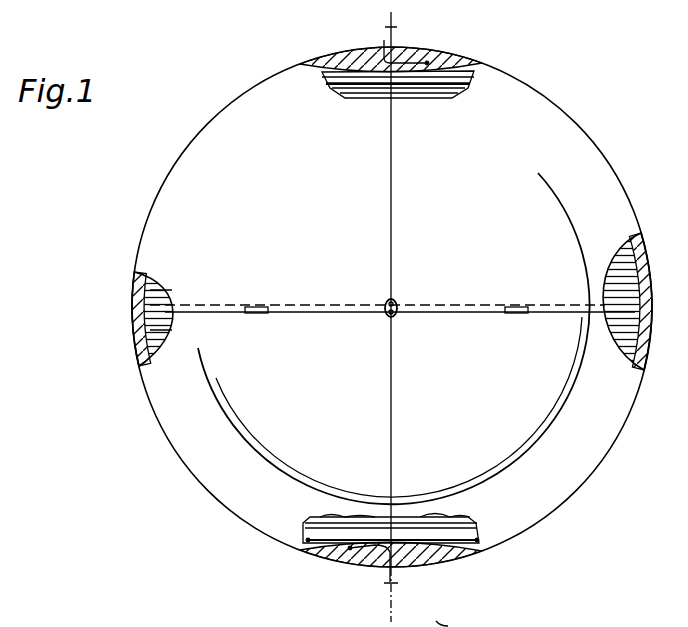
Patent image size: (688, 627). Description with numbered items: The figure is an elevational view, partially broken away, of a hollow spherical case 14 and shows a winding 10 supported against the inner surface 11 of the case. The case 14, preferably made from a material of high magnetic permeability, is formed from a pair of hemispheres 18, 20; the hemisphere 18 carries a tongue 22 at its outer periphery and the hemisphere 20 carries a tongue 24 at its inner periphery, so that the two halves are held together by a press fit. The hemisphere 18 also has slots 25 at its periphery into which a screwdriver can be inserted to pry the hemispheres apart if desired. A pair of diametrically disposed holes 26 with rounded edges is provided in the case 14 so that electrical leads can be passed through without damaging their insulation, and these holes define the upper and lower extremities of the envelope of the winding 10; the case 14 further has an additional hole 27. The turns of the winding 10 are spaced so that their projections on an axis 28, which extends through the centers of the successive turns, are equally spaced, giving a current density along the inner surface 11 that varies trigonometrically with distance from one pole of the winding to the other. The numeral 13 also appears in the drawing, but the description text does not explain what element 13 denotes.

The winding 10 is at (136, 319).
The inner surface 11 is at (458, 556).
The base 13 is at (454, 621).
The case 14 is at (166, 166).
The hemisphere 18 is at (553, 126).
The hemisphere 20 is at (195, 420).
The tongue 22 is at (145, 307).
The tongue 24 is at (148, 328).
The slots 25 is at (255, 314).
The holes 26 is at (384, 44).
The additional hole 27 is at (397, 300).
The axis 28 is at (397, 607).